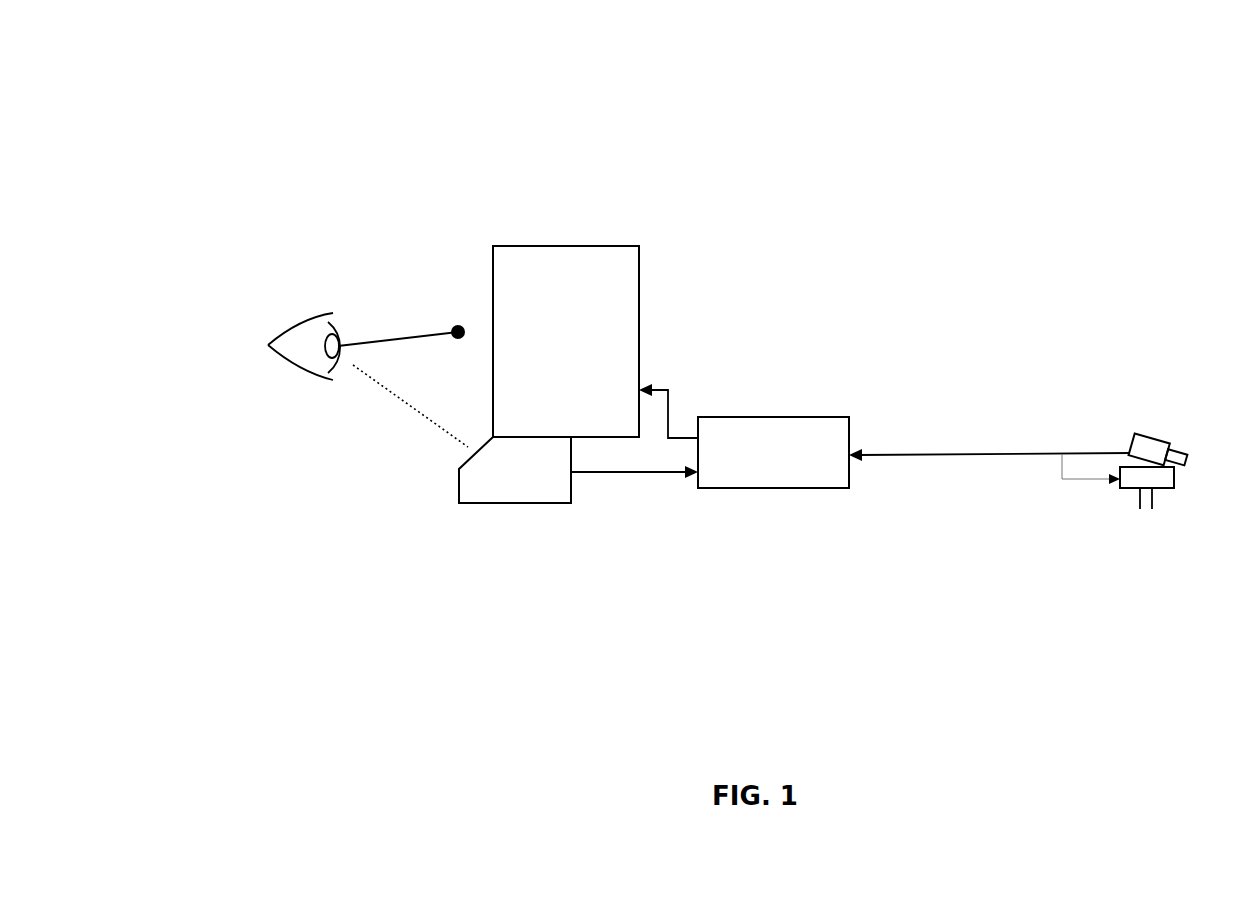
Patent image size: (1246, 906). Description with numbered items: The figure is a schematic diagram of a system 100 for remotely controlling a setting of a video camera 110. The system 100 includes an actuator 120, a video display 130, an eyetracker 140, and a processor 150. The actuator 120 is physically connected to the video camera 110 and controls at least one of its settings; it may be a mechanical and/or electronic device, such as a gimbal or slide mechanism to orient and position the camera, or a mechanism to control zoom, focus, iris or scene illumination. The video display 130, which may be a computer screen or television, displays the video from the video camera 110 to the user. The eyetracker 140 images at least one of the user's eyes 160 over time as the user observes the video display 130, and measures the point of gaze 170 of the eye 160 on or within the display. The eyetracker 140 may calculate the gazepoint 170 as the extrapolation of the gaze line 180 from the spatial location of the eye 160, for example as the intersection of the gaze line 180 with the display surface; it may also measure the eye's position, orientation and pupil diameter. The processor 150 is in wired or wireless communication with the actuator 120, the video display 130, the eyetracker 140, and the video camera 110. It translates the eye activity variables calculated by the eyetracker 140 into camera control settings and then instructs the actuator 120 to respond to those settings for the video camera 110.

The system 100 is at (422, 727).
The video camera 110 is at (1135, 433).
The actuator 120 is at (1167, 488).
The video display 130 is at (585, 246).
The eyetracker 140 is at (498, 505).
The processor 150 is at (745, 488).
The eye 160 is at (282, 345).
The point of gaze 170 is at (457, 328).
The gaze line 180 is at (390, 336).